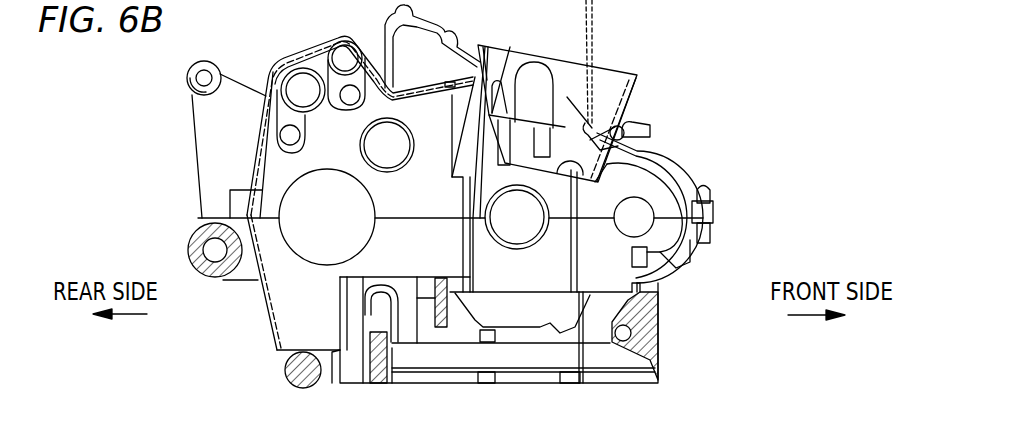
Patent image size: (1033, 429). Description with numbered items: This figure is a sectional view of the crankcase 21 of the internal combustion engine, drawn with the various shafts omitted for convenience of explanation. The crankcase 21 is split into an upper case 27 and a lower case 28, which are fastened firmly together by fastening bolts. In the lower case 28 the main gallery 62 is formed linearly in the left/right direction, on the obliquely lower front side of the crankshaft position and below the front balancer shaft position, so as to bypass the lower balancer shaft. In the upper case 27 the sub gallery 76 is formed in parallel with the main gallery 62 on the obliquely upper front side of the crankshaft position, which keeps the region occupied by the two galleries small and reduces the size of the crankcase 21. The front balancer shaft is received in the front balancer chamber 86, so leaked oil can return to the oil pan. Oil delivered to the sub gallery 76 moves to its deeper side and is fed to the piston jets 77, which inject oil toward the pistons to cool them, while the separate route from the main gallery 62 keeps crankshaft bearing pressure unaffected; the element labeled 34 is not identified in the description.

The crankcase 21 is at (724, 56).
The cylinder head 34 is at (492, 95).
The upper case 27 is at (631, 80).
The sub gallery 76 is at (627, 116).
The piston jets 77 is at (652, 163).
The front balancer chamber 86 is at (678, 190).
The main gallery 62 is at (633, 333).
The lower case 28 is at (618, 380).